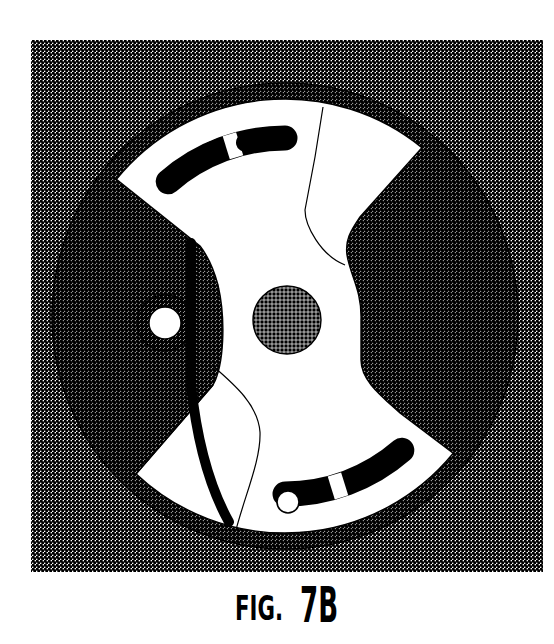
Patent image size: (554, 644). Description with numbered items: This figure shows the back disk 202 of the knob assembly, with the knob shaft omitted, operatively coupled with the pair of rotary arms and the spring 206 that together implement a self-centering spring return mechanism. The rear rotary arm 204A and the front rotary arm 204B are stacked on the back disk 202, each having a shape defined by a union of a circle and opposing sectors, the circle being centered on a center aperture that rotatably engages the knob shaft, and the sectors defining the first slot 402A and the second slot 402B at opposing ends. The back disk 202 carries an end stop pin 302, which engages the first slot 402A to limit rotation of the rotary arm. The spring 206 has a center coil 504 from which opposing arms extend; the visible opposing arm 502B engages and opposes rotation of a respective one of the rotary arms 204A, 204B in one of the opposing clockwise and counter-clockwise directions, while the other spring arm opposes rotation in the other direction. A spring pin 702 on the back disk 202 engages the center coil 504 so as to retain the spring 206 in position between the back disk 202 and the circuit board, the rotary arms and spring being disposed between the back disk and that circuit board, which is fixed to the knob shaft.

The back disk 202 is at (460, 323).
The rear rotary arm 204A is at (137, 475).
The front rotary arm 204B is at (277, 250).
The spring 206 is at (158, 312).
The end stop pin 302 is at (290, 497).
The first slot 402A is at (393, 473).
The second slot 402B is at (182, 165).
The opposing arm 502B is at (228, 524).
The center coil 504 is at (162, 365).
The spring pin 702 is at (155, 300).